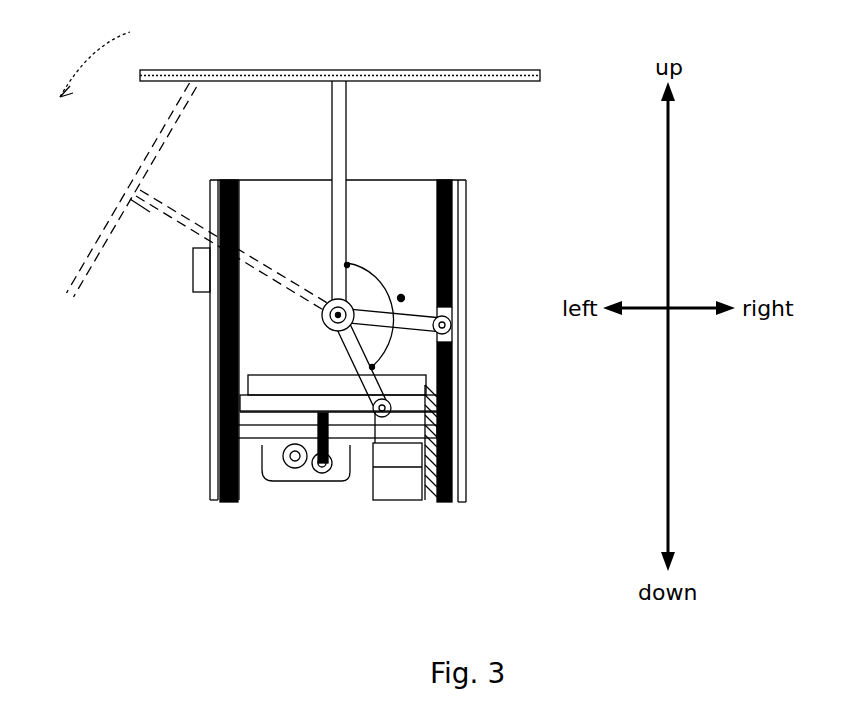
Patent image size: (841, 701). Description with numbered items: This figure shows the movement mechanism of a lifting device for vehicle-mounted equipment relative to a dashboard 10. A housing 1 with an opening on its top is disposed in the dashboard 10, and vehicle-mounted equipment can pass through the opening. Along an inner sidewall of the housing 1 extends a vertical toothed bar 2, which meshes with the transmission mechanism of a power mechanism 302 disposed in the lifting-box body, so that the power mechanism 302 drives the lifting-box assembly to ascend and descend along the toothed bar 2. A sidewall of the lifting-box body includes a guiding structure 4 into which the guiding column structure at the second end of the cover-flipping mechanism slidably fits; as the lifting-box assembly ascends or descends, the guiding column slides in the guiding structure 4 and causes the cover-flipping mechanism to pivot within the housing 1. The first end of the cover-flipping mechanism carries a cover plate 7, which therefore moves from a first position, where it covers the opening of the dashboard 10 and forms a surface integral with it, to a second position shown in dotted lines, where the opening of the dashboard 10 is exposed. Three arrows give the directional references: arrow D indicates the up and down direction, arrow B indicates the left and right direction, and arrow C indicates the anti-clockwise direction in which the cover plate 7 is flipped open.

The housing 1 is at (460, 292).
The toothed bar 2 is at (218, 345).
The guiding structure 4 is at (425, 410).
The cover plate 7 is at (355, 77).
The dashboard 10 is at (487, 77).
The power mechanism 302 is at (318, 476).
The arrow indicating anti-clockwise direction C is at (90, 55).
The arrow indicating up and down direction D is at (668, 240).
The arrow indicating left and right direction B is at (685, 305).